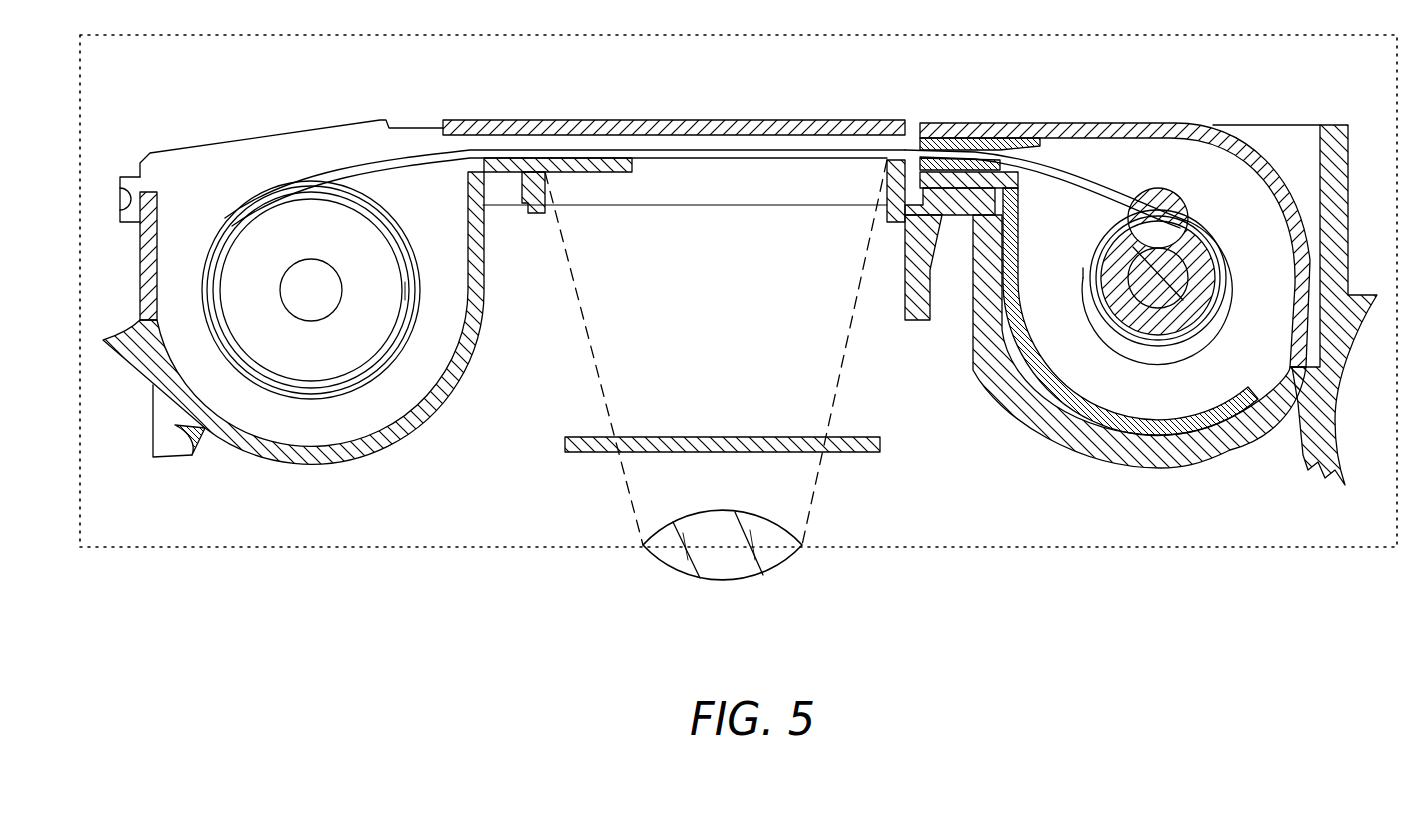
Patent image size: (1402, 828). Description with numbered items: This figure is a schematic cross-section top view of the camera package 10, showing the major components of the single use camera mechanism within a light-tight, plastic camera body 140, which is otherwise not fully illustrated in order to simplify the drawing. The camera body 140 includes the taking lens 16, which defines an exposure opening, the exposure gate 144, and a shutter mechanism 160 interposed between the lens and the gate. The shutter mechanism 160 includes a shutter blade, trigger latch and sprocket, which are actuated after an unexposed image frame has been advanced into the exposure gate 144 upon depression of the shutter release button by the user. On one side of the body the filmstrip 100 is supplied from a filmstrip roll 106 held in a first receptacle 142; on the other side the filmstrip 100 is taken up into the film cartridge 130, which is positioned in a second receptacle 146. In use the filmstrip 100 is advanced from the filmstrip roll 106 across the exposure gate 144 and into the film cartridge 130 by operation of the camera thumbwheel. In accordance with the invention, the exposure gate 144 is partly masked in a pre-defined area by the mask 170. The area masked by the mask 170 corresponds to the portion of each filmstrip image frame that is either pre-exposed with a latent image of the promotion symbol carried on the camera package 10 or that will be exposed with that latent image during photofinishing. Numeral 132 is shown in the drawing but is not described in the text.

The camera package 10 is at (1245, 548).
The taking lens 16 is at (720, 582).
The filmstrip 100 is at (720, 152).
The filmstrip roll 106 is at (303, 217).
The film cartridge 130 is at (1207, 140).
The liner 132 is at (1057, 437).
The camera body 140 is at (1080, 455).
The first receptacle 142 is at (328, 432).
The exposure gate 144 is at (707, 166).
The second receptacle 146 is at (1282, 142).
The shutter mechanism 160 is at (878, 438).
The mask 170 is at (588, 175).